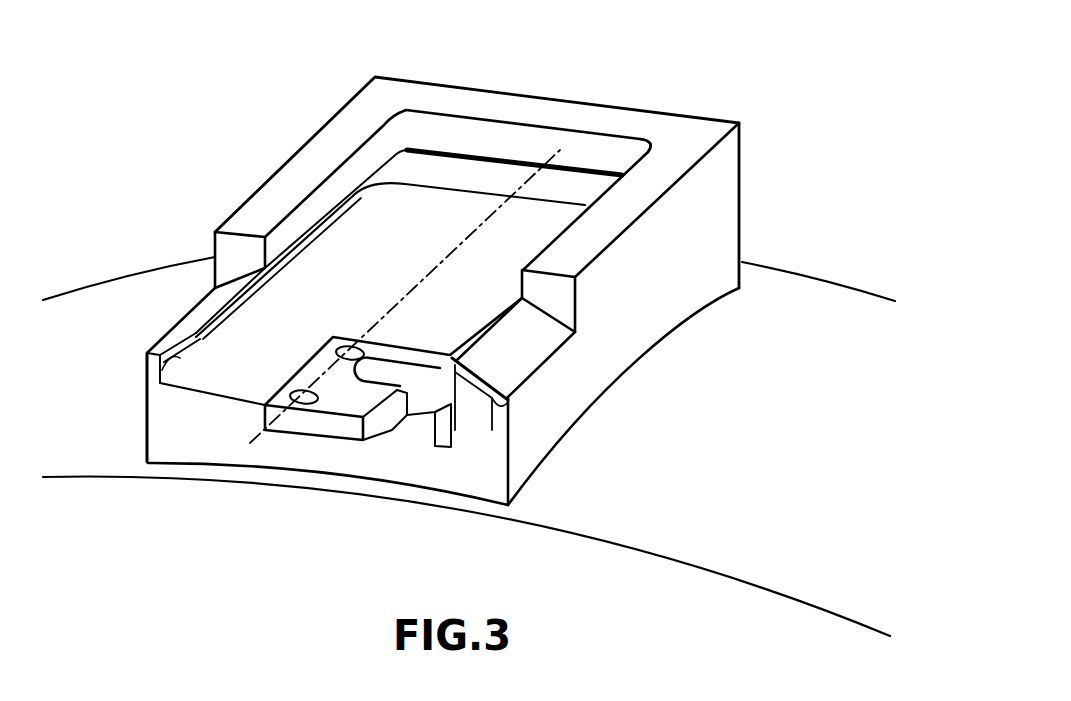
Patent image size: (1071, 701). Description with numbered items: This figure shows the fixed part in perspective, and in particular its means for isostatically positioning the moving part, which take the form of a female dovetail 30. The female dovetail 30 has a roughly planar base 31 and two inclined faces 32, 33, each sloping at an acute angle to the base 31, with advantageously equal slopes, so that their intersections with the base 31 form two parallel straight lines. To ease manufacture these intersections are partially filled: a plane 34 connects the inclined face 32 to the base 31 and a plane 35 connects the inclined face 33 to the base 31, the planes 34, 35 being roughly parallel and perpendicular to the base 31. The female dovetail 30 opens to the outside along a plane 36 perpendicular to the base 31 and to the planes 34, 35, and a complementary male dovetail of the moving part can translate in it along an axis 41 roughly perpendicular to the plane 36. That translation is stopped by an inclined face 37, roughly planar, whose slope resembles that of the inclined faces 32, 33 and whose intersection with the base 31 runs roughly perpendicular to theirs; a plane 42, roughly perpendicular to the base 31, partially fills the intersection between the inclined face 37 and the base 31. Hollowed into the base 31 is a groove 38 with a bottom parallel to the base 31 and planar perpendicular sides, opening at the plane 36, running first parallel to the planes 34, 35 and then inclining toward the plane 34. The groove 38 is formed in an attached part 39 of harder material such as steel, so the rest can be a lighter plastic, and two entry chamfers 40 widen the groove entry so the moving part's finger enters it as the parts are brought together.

The female dovetail 30 is at (333, 92).
The base 31 is at (453, 203).
The inclined face 32 is at (145, 373).
The inclined face 33 is at (510, 483).
The plane 34 is at (148, 383).
The plane 35 is at (500, 417).
The plane 36 is at (218, 437).
The inclined face 37 is at (447, 150).
The groove 38 is at (420, 428).
The attached part 39 is at (345, 402).
The entry chamfer 40 is at (378, 424).
The axis 41 is at (487, 223).
The plane 42 is at (583, 187).